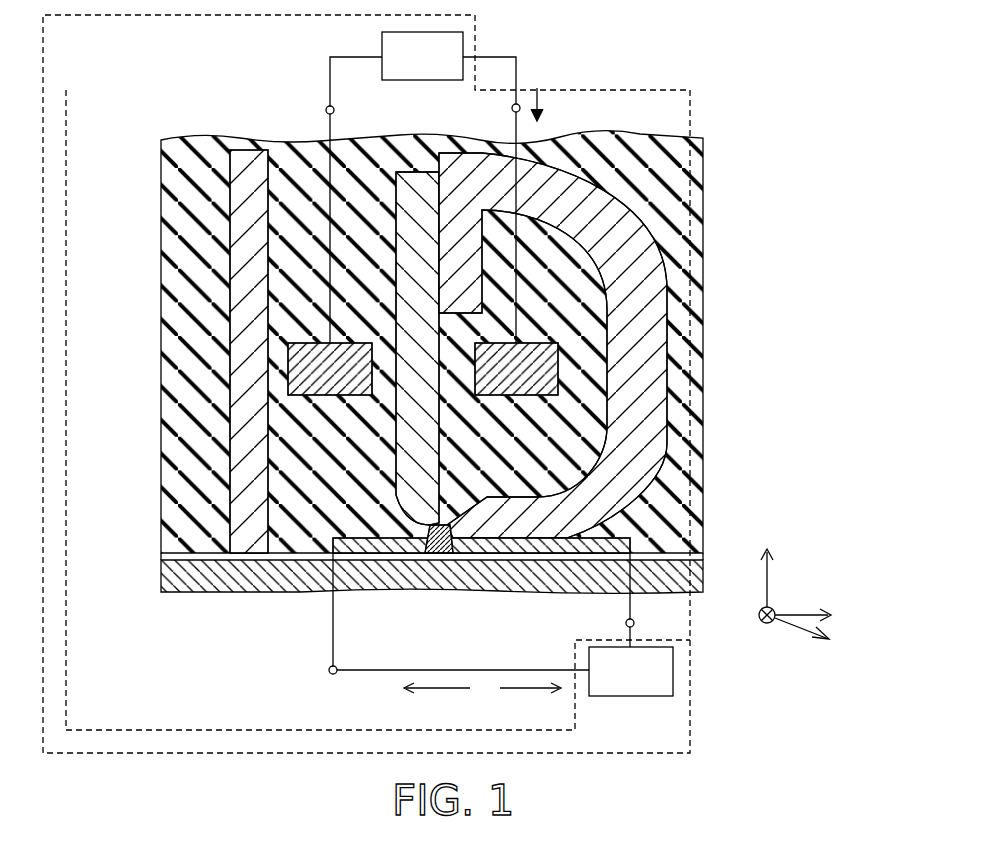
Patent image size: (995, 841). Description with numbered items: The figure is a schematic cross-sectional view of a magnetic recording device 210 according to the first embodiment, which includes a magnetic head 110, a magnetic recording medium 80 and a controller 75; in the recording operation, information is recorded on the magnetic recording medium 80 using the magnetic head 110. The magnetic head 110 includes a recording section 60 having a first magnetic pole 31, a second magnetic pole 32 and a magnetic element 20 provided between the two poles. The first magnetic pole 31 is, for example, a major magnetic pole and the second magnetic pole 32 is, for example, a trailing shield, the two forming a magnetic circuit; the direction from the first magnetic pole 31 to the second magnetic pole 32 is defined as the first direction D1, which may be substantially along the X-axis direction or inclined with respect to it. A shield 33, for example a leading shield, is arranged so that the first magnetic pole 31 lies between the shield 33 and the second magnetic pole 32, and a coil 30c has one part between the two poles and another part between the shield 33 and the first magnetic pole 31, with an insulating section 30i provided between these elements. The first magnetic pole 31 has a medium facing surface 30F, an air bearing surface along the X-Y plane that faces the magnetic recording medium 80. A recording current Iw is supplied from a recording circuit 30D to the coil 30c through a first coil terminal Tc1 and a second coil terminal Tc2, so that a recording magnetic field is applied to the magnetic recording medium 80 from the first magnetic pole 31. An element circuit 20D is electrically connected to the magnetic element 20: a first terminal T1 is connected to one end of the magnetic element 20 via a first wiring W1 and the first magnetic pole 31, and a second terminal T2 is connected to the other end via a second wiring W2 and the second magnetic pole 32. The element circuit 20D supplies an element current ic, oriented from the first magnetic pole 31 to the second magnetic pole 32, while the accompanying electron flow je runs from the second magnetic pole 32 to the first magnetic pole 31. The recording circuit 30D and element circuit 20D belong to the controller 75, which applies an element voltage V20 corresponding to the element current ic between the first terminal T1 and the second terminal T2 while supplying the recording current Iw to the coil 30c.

The magnetic head 110 is at (712, 107).
The magnetic recording device 210 is at (815, 85).
The recording section 60 is at (735, 150).
The insulating section 30i is at (300, 305).
The coil 30c is at (288, 370).
The recording circuit 30D is at (463, 46).
The first magnetic pole 31 is at (420, 188).
The second magnetic pole 32 is at (650, 447).
The shield 33 is at (240, 470).
The medium facing surface 30F is at (420, 555).
The magnetic element 20 is at (445, 556).
The element circuit 20D is at (673, 668).
The magnetic recording medium 80 is at (175, 578).
The controller 75 is at (690, 737).
The first coil terminal Tc1 is at (326, 110).
The second coil terminal Tc2 is at (512, 108).
The recording current Iw is at (535, 100).
The first wiring W1 is at (333, 630).
The second wiring W2 is at (630, 613).
The first terminal T1 is at (329, 670).
The second terminal T2 is at (640, 623).
The element voltage V20 is at (337, 676).
The element current ic is at (450, 690).
The electron flow je is at (515, 690).
The first direction D1 is at (797, 591).